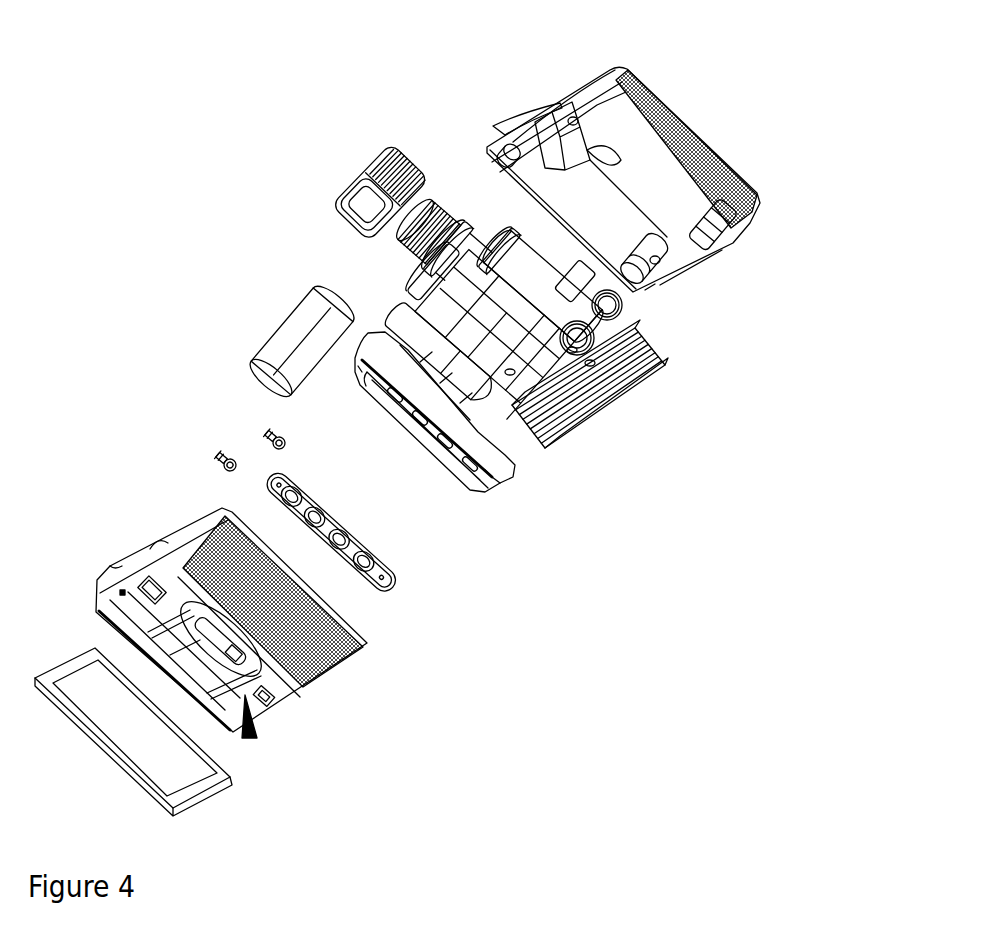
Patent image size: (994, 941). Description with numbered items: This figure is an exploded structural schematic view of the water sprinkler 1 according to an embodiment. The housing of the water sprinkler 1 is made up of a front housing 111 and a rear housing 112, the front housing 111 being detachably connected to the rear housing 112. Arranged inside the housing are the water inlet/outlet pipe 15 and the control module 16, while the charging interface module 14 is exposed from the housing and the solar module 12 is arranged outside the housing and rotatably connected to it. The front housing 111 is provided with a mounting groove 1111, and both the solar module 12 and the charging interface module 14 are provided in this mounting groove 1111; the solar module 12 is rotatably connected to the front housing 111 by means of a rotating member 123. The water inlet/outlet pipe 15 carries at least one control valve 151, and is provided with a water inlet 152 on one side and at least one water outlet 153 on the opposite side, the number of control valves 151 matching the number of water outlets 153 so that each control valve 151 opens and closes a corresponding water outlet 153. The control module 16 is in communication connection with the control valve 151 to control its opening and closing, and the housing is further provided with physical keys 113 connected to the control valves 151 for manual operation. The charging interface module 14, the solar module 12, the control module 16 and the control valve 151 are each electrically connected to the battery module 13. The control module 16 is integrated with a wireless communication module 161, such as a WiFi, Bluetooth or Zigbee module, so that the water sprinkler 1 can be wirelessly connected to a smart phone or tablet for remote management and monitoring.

The water sprinkler 1 is at (386, 53).
The rear housing 112 is at (509, 124).
The front housing 111 is at (190, 535).
The mounting groove 1111 is at (253, 742).
The physical keys 113 is at (390, 577).
The solar module 12 is at (87, 682).
The rotating member 123 is at (275, 441).
The battery module 13 is at (253, 351).
The charging interface module 14 is at (267, 708).
The water inlet/outlet pipe 15 is at (572, 301).
The control valve 151 is at (510, 372).
The water inlet 152 is at (455, 267).
The water outlet 153 is at (517, 447).
The control module 16 is at (428, 419).
The wireless communication module 161 is at (395, 411).